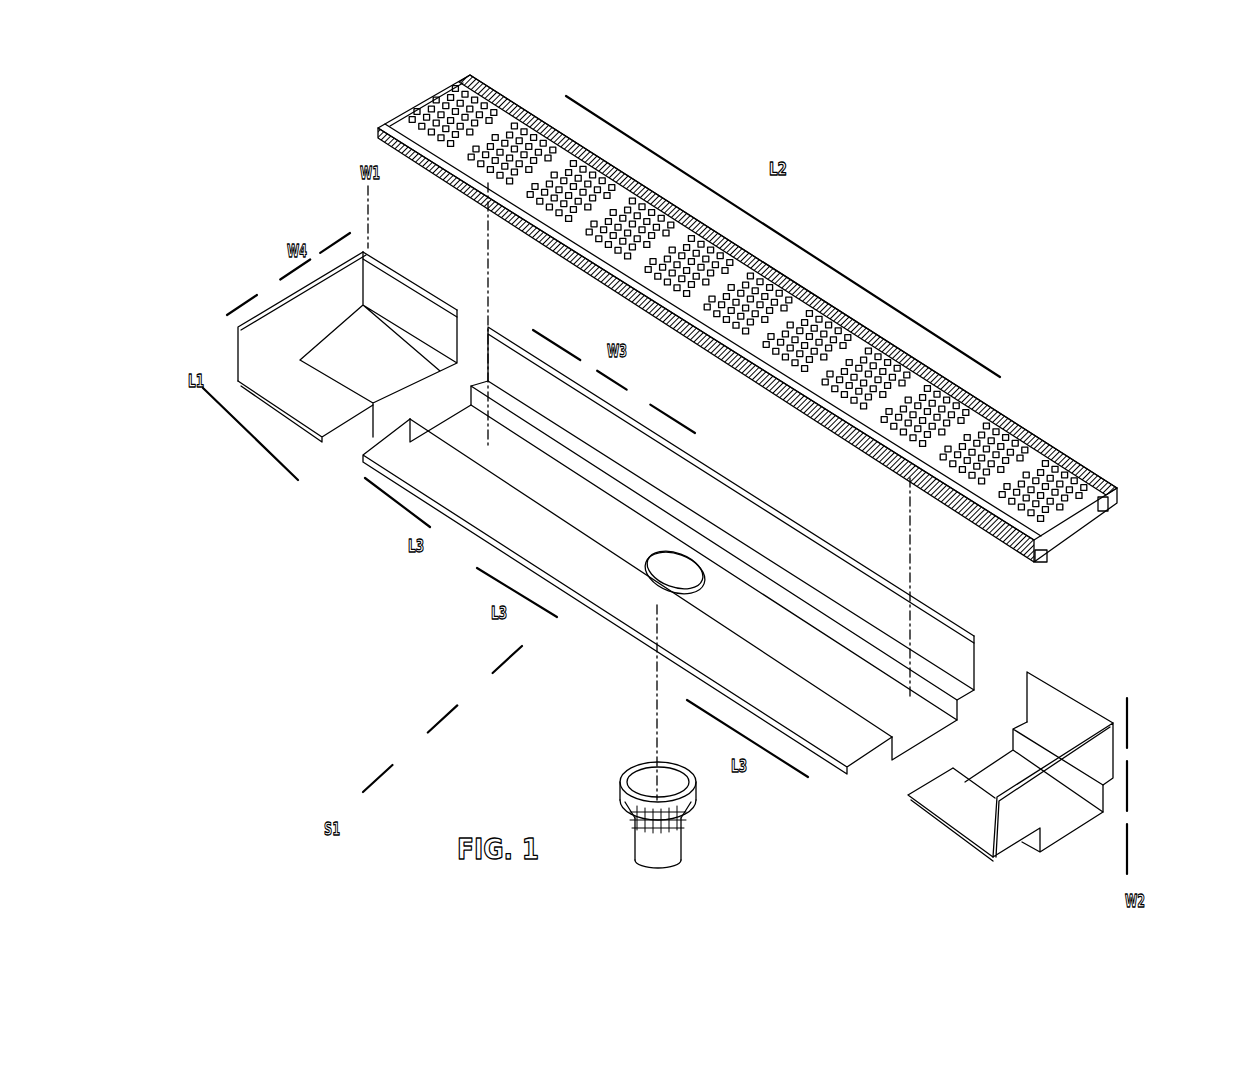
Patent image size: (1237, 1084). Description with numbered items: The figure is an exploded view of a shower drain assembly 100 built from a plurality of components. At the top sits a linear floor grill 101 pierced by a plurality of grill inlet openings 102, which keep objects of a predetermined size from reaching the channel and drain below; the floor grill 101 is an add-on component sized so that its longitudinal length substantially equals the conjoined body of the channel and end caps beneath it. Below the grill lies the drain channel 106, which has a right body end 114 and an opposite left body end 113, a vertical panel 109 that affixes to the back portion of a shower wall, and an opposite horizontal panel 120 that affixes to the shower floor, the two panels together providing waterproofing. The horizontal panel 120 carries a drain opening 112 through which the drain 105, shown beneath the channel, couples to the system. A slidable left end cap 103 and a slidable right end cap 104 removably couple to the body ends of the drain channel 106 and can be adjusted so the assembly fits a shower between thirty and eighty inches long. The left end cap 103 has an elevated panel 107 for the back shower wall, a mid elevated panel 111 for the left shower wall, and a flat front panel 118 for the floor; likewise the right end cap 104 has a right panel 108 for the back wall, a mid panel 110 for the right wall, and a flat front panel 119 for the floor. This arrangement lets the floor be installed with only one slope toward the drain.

The drain assembly 100 is at (1014, 168).
The floor grill 101 is at (1080, 452).
The grill inlet openings 102 is at (551, 138).
The left end cap 103 is at (648, 596).
The right end cap 104 is at (1039, 773).
The drain 105 is at (668, 845).
The drain channel 106 is at (468, 530).
The elevated panel 107 is at (393, 260).
The right panel 108 is at (1037, 668).
The vertical panel 109 is at (710, 463).
The mid panel 110 is at (1050, 777).
The mid elevated panel 111 is at (341, 357).
The drain opening 112 is at (713, 595).
The left body end 113 is at (920, 740).
The right body end 114 is at (452, 422).
The flat front panel 118 is at (313, 413).
The flat front panel 119 is at (975, 826).
The horizontal panel 120 is at (655, 622).